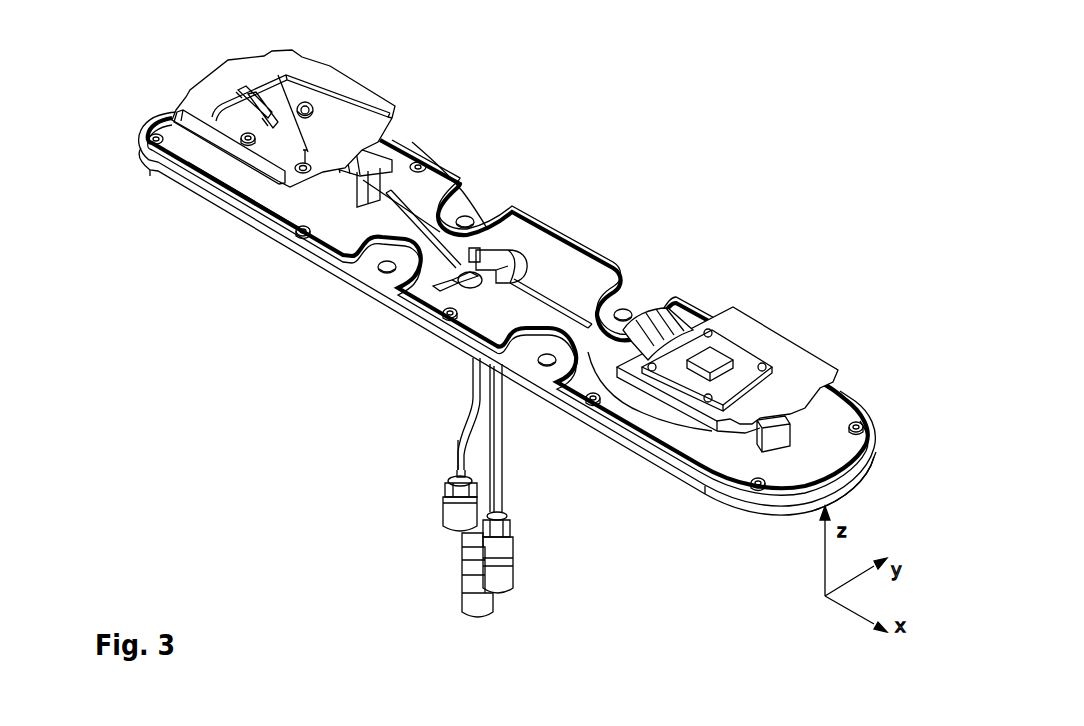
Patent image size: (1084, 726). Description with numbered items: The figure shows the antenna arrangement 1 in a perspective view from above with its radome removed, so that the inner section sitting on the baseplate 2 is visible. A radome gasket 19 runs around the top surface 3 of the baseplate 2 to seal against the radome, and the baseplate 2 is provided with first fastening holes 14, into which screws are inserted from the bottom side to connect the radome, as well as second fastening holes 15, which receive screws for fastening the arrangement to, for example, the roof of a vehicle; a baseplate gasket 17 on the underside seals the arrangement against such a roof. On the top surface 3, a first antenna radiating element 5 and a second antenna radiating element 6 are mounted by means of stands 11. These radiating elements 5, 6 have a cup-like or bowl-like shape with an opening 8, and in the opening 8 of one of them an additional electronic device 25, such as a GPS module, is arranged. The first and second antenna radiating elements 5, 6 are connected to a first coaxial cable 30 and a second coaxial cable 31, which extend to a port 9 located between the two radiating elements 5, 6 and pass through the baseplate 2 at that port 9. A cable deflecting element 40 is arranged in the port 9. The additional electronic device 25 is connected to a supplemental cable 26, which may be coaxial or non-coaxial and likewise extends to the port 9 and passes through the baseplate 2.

The antenna arrangement 1 is at (141, 30).
The baseplate 2 is at (168, 181).
The top surface 3 is at (203, 163).
The first antenna radiating element 5 is at (273, 63).
The second antenna radiating element 6 is at (730, 327).
The opening 8 is at (271, 84).
The port 9 is at (517, 267).
The stands 11 is at (377, 147).
The first fastening holes 14 is at (306, 233).
The second fastening holes 15 is at (380, 270).
The baseplate gasket 17 is at (240, 214).
The radome gasket 19 is at (838, 467).
The additional electronic device 25 is at (707, 363).
The supplemental cable 26 is at (460, 457).
The first coaxial cable 30 is at (400, 190).
The second coaxial cable 31 is at (585, 318).
The cable deflecting element 40 is at (530, 234).